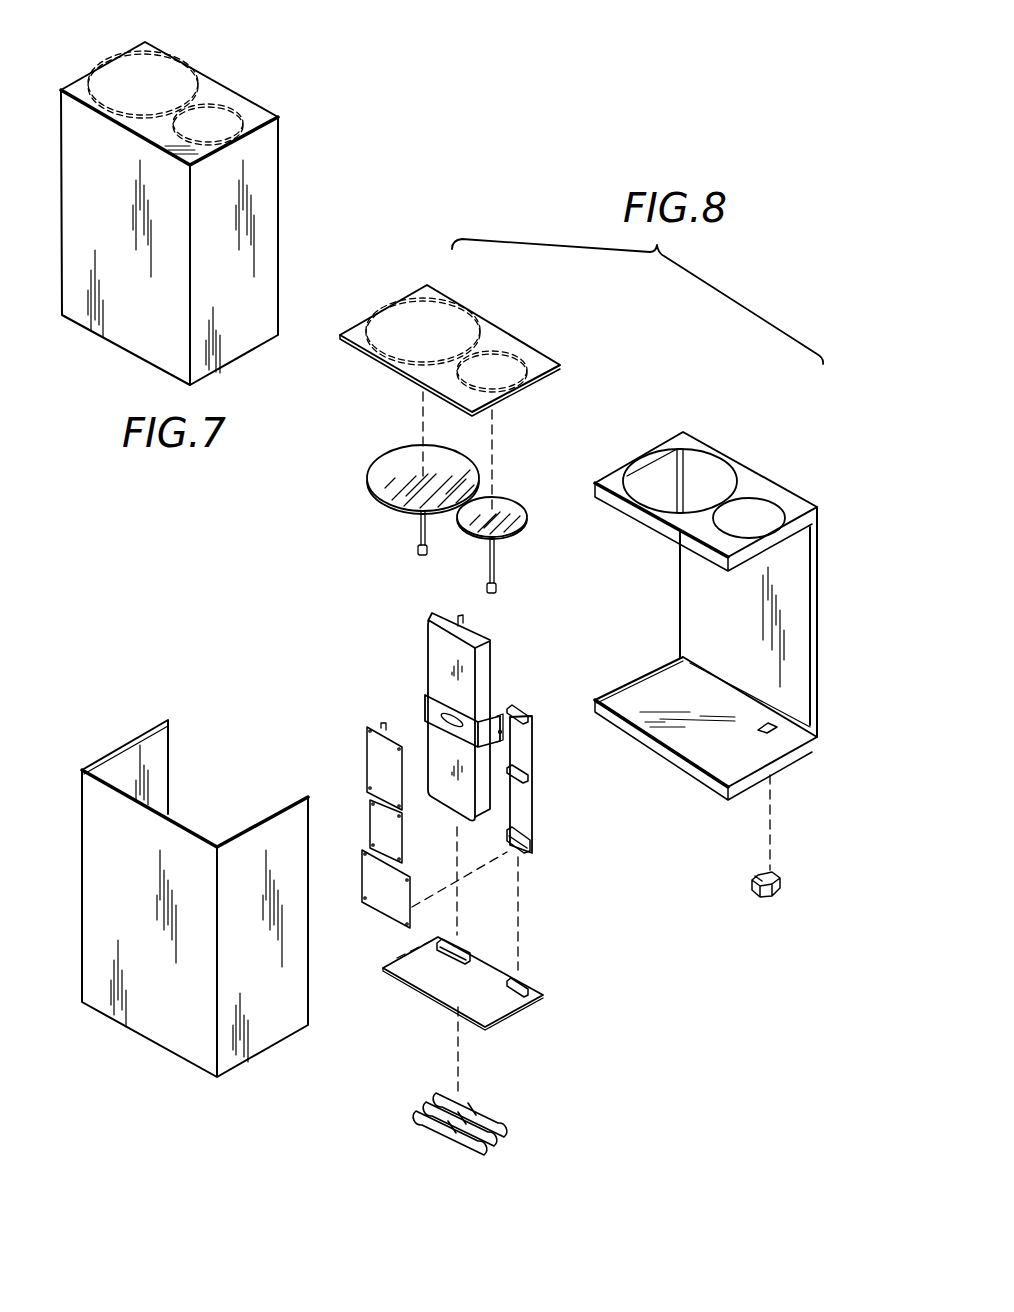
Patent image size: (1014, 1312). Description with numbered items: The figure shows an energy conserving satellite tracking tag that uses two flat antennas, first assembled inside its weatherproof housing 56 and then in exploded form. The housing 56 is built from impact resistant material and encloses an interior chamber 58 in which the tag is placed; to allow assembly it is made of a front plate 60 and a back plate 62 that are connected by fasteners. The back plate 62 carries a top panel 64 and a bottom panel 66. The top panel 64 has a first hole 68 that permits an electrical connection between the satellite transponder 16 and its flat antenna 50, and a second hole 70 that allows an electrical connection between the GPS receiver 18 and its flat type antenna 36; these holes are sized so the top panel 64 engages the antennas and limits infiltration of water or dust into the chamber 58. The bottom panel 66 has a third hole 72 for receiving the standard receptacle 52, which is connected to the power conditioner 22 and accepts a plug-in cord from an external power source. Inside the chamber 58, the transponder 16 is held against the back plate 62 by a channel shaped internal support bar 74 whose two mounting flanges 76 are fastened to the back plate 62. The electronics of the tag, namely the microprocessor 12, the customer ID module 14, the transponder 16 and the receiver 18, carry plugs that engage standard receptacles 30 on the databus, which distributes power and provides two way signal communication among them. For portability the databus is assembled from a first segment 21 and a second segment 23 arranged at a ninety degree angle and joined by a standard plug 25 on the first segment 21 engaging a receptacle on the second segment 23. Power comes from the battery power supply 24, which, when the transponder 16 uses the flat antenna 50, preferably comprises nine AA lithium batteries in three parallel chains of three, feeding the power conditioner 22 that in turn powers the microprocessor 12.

In FIG. 8, the microprocessor 12 is at (367, 906).
In FIG. 8, the customer ID module 14 is at (367, 813).
In FIG. 8, the satellite transponder 16 is at (427, 645).
In FIG. 8, the global positioning satellite (GPS) receiver 18 is at (367, 743).
In FIG. 8, the first segment 21 is at (507, 1017).
In FIG. 8, the power conditioner 22 is at (372, 906).
In FIG. 8, the second segment 23 is at (535, 808).
In FIG. 8, the battery power supply 24 is at (487, 1122).
In FIG. 8, the standard plug 25 is at (522, 982).
In FIG. 8, the standard receptacles 30 is at (517, 713).
In FIG. 8, the flat type antenna 36 is at (505, 502).
In FIG. 7, the flat antenna 50 is at (168, 72).
In FIG. 8, the flat antenna 50 is at (388, 460).
In FIG. 8, the standard receptacle 52 is at (785, 890).
In FIG. 7, the weatherproof housing 56 is at (280, 175).
In FIG. 8, the interior chamber 58 is at (770, 693).
In FIG. 8, the front plate 60 is at (82, 797).
In FIG. 8, the back plate 62 is at (730, 624).
In FIG. 8, the top panel 64 is at (757, 480).
In FIG. 8, the bottom panel 66 is at (700, 772).
In FIG. 8, the first hole 68 is at (713, 470).
In FIG. 8, the second hole 70 is at (770, 517).
In FIG. 8, the third hole 72 is at (777, 731).
In FIG. 8, the internal support bar 74 is at (425, 703).
In FIG. 8, the mounting flanges 76 is at (498, 702).